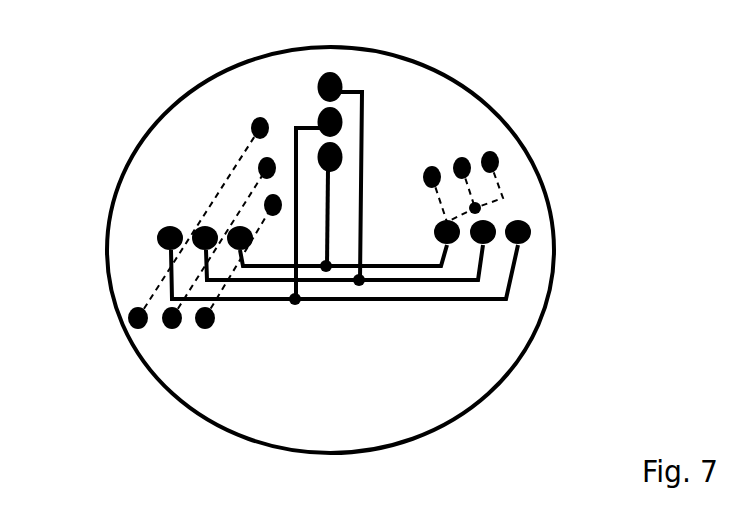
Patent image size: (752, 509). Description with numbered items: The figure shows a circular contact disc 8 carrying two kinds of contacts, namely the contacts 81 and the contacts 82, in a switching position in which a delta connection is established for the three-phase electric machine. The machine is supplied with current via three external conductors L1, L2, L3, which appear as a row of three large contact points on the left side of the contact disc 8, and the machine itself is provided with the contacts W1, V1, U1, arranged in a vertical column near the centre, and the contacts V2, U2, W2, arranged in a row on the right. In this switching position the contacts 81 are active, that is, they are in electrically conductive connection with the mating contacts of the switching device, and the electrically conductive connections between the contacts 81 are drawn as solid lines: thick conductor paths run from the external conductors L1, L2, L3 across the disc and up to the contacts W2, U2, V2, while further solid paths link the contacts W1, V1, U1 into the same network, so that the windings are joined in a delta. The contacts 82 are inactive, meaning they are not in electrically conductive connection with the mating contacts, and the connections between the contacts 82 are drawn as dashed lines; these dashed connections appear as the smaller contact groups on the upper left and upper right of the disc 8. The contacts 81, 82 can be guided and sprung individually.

The contact disc 8 is at (345, 396).
The contacts 81 is at (469, 313).
The contacts 82 is at (468, 142).
The external conductor L1 is at (165, 226).
The external conductor L2 is at (205, 248).
The external conductor L3 is at (240, 250).
The contact U1 is at (318, 115).
The contact V1 is at (335, 85).
The contact W1 is at (320, 150).
The contact U2 is at (487, 243).
The contact V2 is at (450, 243).
The contact W2 is at (519, 220).